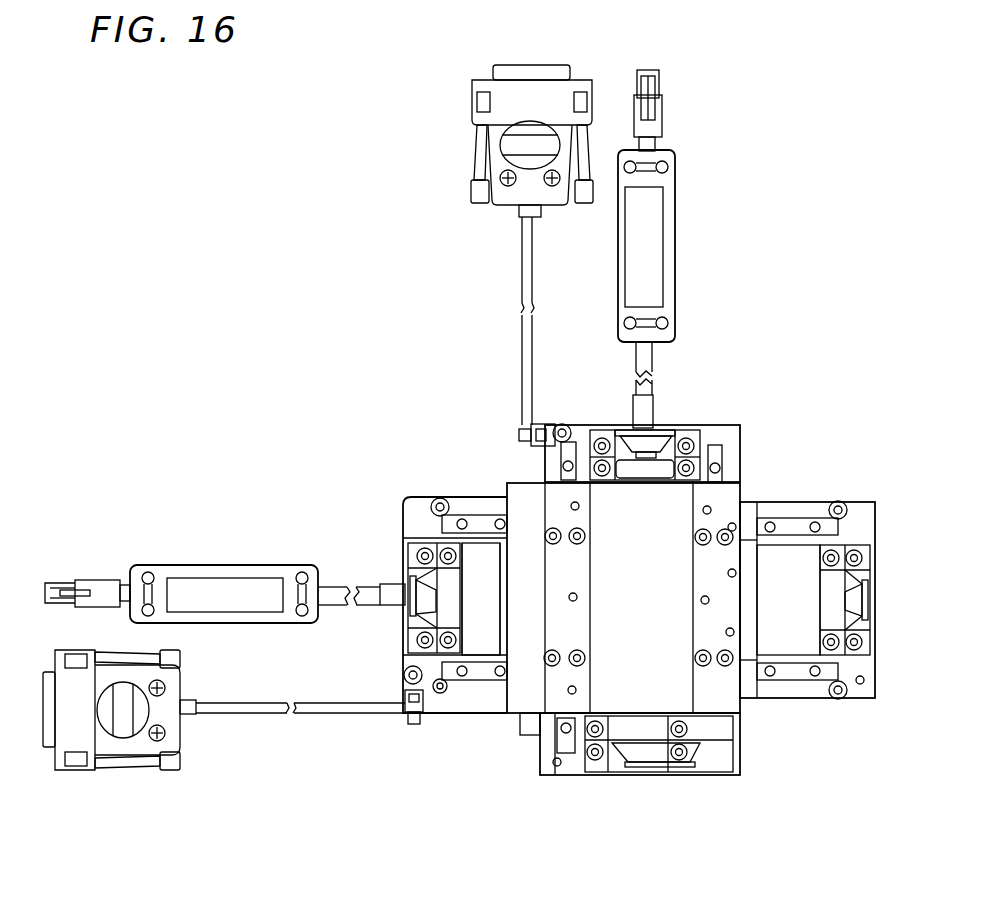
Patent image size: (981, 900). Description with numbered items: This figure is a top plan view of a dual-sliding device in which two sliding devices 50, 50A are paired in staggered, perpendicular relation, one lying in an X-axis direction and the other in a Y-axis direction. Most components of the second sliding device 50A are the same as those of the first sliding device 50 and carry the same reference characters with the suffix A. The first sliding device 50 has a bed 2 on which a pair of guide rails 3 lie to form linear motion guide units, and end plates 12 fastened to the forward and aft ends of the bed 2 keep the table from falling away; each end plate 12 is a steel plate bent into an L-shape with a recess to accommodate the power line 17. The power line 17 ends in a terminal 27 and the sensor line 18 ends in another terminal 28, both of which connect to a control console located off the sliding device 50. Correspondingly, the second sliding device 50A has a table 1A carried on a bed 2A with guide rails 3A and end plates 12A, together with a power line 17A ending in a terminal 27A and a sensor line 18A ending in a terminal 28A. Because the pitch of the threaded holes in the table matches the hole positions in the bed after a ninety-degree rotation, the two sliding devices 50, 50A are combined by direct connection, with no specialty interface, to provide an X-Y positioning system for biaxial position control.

The table 1A is at (722, 510).
The bed 2 is at (488, 640).
The bed 2A is at (660, 442).
The guide rails 3 is at (485, 515).
The guide rails 3A is at (570, 440).
The end plates 12 is at (412, 580).
The end plates 12A is at (650, 770).
The power line 17 is at (336, 587).
The power line 17A is at (645, 395).
The sensor line 18 is at (340, 708).
The sensor line 18A is at (527, 337).
The terminal 27 is at (104, 582).
The terminal 27A is at (655, 114).
The terminal 28 is at (105, 745).
The terminal 28A is at (512, 104).
The sliding device 50 is at (408, 492).
The second sliding device 50A is at (737, 422).